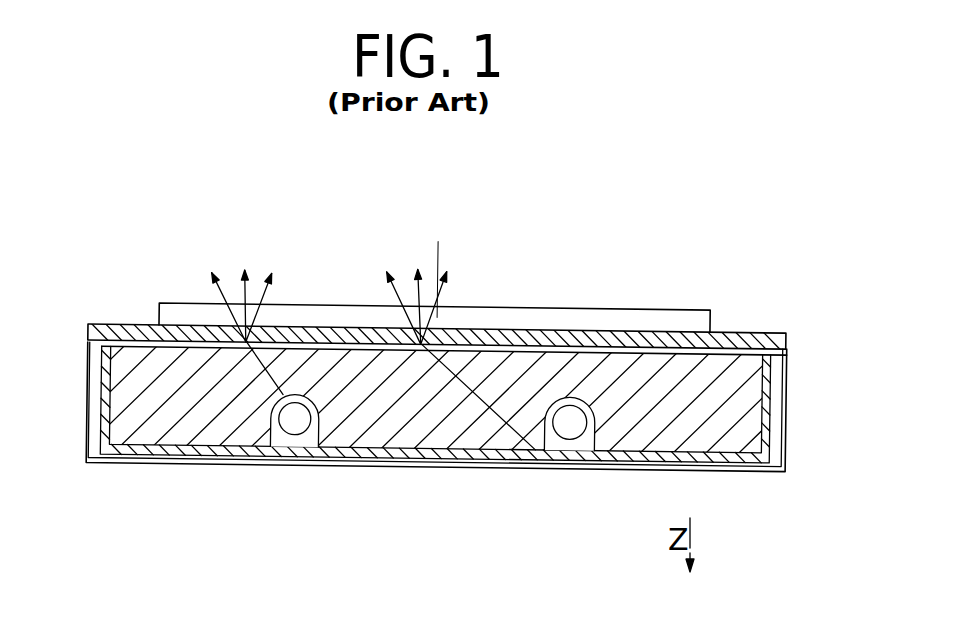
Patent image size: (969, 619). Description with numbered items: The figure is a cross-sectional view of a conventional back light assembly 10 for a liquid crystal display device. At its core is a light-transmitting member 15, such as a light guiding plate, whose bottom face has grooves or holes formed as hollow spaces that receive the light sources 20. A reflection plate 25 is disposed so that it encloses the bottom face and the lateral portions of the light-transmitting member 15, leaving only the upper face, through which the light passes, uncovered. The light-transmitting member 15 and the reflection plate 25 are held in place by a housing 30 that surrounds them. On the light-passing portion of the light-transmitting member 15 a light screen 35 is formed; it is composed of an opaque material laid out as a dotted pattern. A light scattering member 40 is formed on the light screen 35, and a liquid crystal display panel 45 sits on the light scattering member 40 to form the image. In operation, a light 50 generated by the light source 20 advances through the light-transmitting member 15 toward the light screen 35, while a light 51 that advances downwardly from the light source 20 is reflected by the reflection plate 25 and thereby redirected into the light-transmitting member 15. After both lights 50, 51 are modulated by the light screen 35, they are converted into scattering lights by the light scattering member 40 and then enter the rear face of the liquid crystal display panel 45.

The back light assembly 10 is at (763, 487).
The light-transmitting member 15 is at (135, 437).
The light source 20 is at (287, 440).
The reflection plate 25 is at (397, 458).
The housing 30 is at (778, 397).
The light screen 35 is at (767, 351).
The light scattering member 40 is at (93, 325).
The liquid crystal display panel 45 is at (705, 318).
The light 50 is at (289, 345).
The light 51 is at (492, 405).